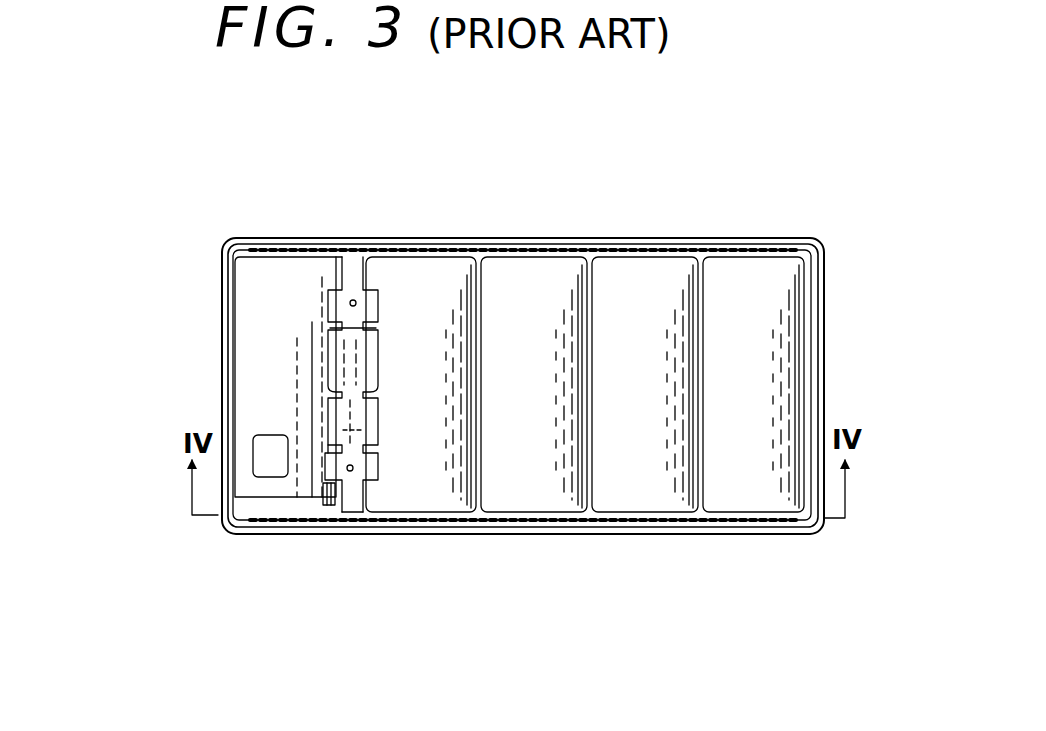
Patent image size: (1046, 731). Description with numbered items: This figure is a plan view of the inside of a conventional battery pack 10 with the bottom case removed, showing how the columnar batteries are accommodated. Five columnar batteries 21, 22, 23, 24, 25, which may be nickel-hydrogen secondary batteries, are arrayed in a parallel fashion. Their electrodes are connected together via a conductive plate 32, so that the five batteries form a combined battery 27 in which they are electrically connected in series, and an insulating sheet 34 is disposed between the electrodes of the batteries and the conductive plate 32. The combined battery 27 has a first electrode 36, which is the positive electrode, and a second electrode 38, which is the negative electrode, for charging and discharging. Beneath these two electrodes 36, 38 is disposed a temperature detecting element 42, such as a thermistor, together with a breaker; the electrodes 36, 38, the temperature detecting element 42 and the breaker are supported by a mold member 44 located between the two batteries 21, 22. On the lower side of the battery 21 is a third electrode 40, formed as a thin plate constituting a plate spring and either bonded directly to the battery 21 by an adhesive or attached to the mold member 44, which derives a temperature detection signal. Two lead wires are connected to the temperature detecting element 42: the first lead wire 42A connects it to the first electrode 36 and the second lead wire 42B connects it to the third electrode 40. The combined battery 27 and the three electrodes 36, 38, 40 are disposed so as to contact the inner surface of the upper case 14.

The battery pack 10 is at (212, 220).
The upper case 14 is at (823, 368).
The battery 21 is at (330, 534).
The battery 22 is at (417, 490).
The battery 23 is at (530, 493).
The battery 24 is at (637, 482).
The battery 25 is at (705, 446).
The combined battery 27 is at (424, 382).
The conductive plate 32 is at (293, 248).
The insulating sheet 34 is at (652, 513).
The first electrode 36 is at (372, 405).
The second electrode 38 is at (378, 328).
The third electrode 40 is at (255, 435).
The temperature detecting element 42 is at (342, 420).
The first lead wire 42A is at (240, 497).
The second lead wire 42B is at (342, 447).
The mold member 44 is at (338, 309).